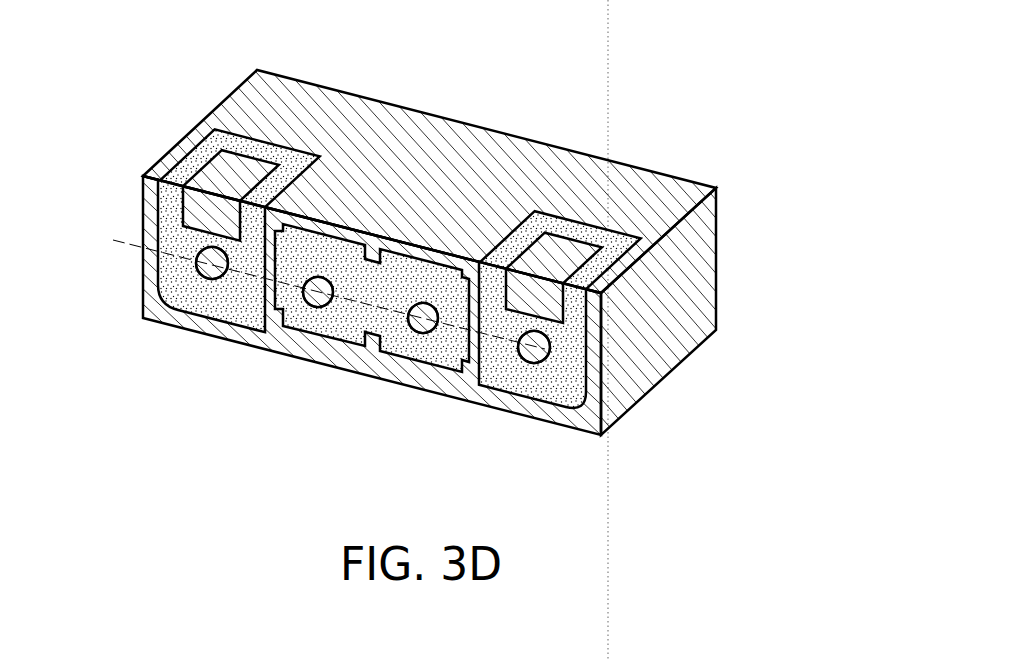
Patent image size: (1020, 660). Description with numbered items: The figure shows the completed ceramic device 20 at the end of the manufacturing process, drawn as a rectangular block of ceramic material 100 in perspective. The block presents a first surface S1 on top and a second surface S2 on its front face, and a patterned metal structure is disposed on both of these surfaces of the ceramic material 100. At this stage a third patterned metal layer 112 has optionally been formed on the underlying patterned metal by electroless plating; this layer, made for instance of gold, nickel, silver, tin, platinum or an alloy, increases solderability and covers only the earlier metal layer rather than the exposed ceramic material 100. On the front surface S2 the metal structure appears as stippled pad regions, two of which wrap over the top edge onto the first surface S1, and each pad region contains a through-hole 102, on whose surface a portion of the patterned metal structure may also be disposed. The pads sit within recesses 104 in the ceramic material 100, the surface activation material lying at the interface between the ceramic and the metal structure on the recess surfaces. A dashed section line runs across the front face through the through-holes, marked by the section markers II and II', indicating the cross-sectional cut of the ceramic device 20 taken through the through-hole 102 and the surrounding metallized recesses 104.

The ceramic device 20 is at (436, 268).
The ceramic material 100 is at (192, 273).
The through-hole 102 is at (207, 277).
The recesses 104 is at (229, 308).
The third patterned metal layer 112 is at (429, 271).
The first surface S1 is at (613, 186).
The second surface S2 is at (582, 421).
The section line II is at (325, 306).
The section line II' is at (427, 388).